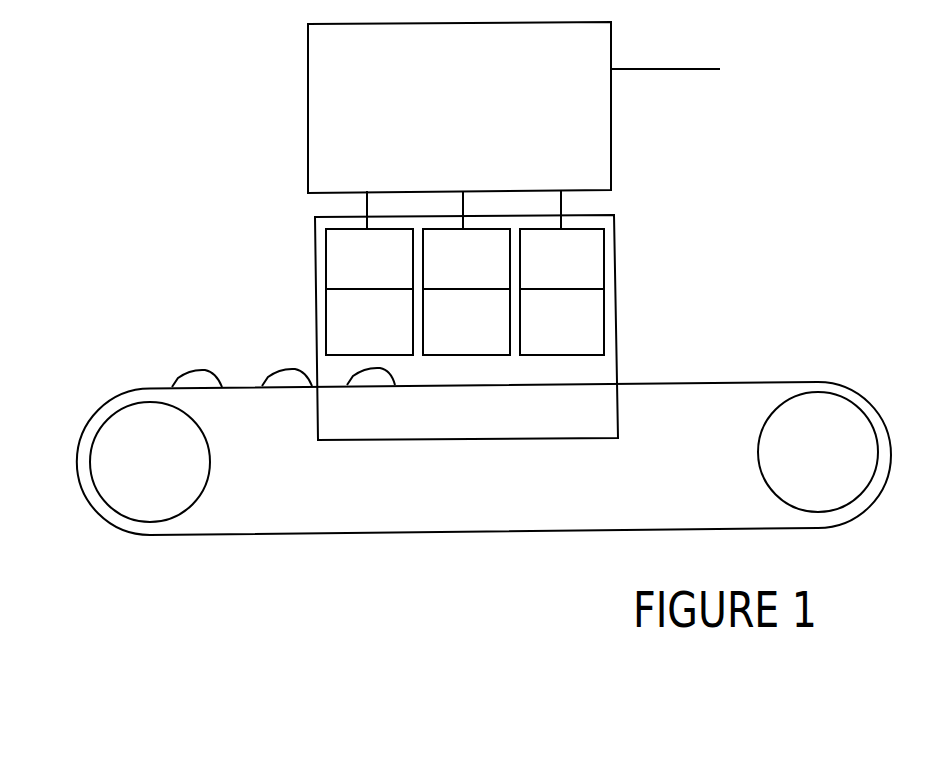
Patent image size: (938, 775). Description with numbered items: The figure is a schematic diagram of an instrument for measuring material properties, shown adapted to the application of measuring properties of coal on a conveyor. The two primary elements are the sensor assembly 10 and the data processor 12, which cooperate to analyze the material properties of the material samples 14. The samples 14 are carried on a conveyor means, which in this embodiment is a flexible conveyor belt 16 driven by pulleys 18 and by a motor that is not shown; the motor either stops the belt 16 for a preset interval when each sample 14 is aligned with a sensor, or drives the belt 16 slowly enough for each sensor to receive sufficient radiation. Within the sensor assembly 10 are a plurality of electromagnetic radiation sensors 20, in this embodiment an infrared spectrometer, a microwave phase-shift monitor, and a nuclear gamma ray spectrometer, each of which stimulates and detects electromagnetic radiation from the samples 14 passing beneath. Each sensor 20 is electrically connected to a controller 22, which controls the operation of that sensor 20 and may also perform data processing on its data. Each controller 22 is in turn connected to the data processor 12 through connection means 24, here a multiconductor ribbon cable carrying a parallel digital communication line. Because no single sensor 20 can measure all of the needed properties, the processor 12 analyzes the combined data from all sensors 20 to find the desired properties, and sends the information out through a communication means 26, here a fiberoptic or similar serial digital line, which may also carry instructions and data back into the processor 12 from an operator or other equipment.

The sensor assembly 10 is at (315, 231).
The data processor 12 is at (310, 92).
The material samples 14 is at (193, 370).
The conveyor belt 16 is at (118, 395).
The pulleys 18 is at (96, 432).
The electromagnetic radiation sensors 20 is at (604, 316).
The controller 22 is at (604, 249).
The connection means 24 is at (560, 203).
The communication means 26 is at (640, 70).